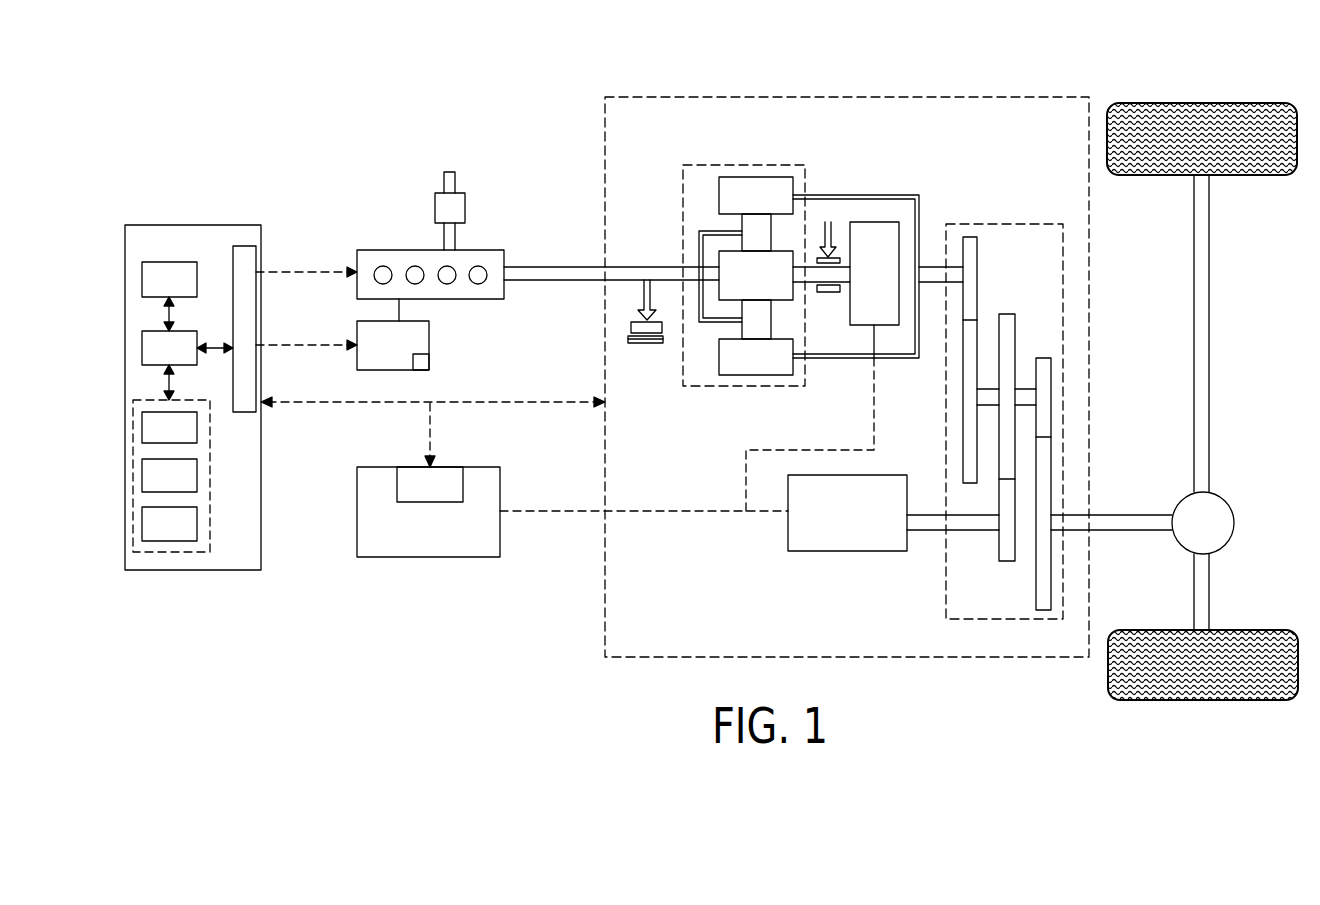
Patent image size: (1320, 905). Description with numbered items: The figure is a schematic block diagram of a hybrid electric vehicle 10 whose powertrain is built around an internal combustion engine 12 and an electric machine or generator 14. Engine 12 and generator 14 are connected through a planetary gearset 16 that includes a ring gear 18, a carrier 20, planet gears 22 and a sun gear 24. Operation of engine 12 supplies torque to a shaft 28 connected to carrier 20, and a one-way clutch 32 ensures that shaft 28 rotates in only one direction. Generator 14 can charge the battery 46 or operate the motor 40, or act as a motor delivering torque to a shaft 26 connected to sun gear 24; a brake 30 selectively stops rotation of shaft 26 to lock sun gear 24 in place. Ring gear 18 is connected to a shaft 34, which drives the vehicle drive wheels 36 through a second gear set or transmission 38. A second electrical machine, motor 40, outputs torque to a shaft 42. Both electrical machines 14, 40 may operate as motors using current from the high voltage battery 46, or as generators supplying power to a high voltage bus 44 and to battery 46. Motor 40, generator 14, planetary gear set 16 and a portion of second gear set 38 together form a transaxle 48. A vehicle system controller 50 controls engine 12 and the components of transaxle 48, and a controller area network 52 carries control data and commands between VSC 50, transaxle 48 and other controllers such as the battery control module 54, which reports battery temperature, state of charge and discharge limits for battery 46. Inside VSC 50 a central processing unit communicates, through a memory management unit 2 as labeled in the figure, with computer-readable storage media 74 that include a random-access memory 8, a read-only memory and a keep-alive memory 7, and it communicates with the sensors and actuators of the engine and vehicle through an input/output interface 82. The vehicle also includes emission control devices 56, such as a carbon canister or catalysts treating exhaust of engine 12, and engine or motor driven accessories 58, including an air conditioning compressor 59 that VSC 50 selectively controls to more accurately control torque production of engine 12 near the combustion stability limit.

The vehicle 10 is at (1078, 70).
The MMU 2 is at (142, 345).
The RAM 8 is at (142, 426).
The planetary gearset 16 is at (142, 474).
The KAM 7 is at (142, 523).
The computer-readable storage media 74 is at (160, 553).
The vehicle system controller 50 is at (187, 225).
The input/output interface 82 is at (243, 246).
The controller area network 52 is at (376, 405).
The internal combustion engine 12 is at (485, 250).
The emission control devices 56 is at (435, 211).
The engine or motor driven accessories 58 is at (357, 326).
The compressor 59 is at (429, 362).
The shaft 28 is at (528, 282).
The one-way clutch 32 is at (628, 330).
The ring gear 18 is at (719, 190).
The planet gears 22 is at (742, 230).
The sun gear 24 is at (793, 306).
The carrier 20 is at (699, 260).
The generator 14 is at (880, 222).
The shaft 26 is at (873, 327).
The brake 30 is at (831, 255).
The shaft 34 is at (935, 264).
The second gear set 38 is at (1010, 620).
The motor 40 is at (848, 552).
The shaft 42 is at (930, 512).
The high voltage bus 44 is at (688, 500).
The high voltage battery 46 is at (357, 512).
The battery control module 54 is at (455, 467).
The transaxle 48 is at (603, 145).
The vehicle drive wheels 36 is at (1240, 175).